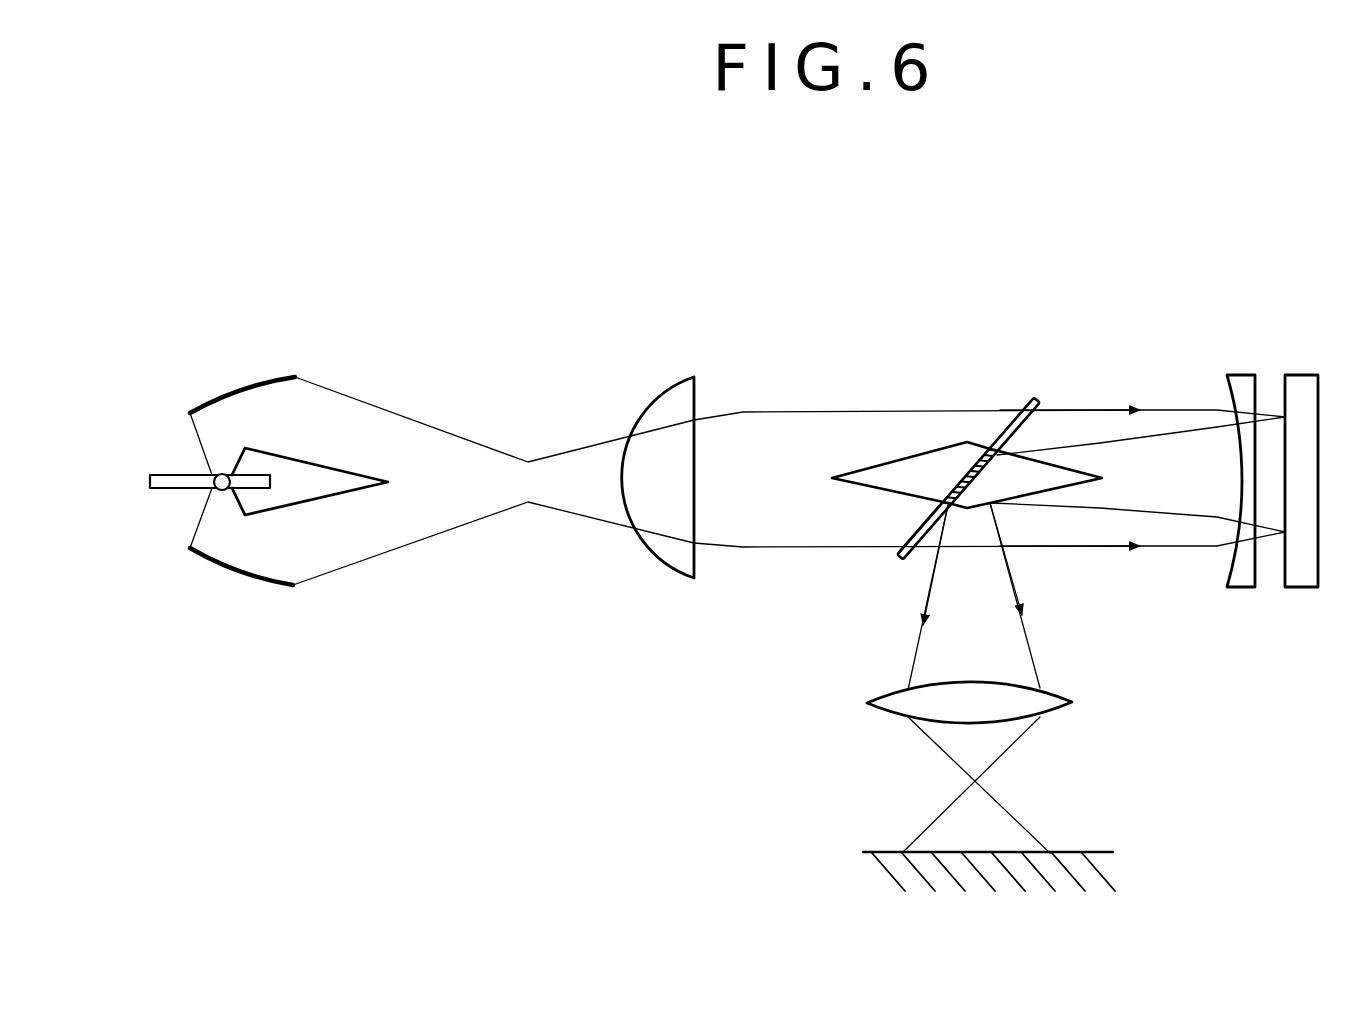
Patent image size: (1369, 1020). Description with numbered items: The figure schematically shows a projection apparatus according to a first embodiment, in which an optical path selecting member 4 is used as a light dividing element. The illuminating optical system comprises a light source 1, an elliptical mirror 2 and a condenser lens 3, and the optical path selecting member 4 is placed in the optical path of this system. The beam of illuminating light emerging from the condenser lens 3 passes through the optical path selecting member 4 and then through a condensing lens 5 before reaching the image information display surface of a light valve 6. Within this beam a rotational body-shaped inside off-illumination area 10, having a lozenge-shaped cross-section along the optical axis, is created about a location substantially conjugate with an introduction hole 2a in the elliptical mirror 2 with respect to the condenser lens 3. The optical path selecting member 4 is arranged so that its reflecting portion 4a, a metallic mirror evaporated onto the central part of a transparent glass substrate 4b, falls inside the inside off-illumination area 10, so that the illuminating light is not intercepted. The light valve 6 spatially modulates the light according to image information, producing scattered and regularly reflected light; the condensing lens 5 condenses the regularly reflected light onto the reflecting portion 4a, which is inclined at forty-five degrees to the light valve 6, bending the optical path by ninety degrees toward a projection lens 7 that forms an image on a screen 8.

The light source 1 is at (255, 475).
The elliptical mirror 2 is at (242, 390).
The introduction hole 2a is at (199, 519).
The condenser lens 3 is at (730, 393).
The optical path selecting member 4 is at (1040, 421).
The reflecting portion 4a is at (960, 482).
The transparent glass substrate 4b is at (930, 533).
The condensing lens 5 is at (1243, 370).
The light valve 6 is at (1305, 370).
The projection lens 7 is at (1048, 697).
The screen 8 is at (1065, 850).
The inside off-illumination area 10 is at (878, 477).